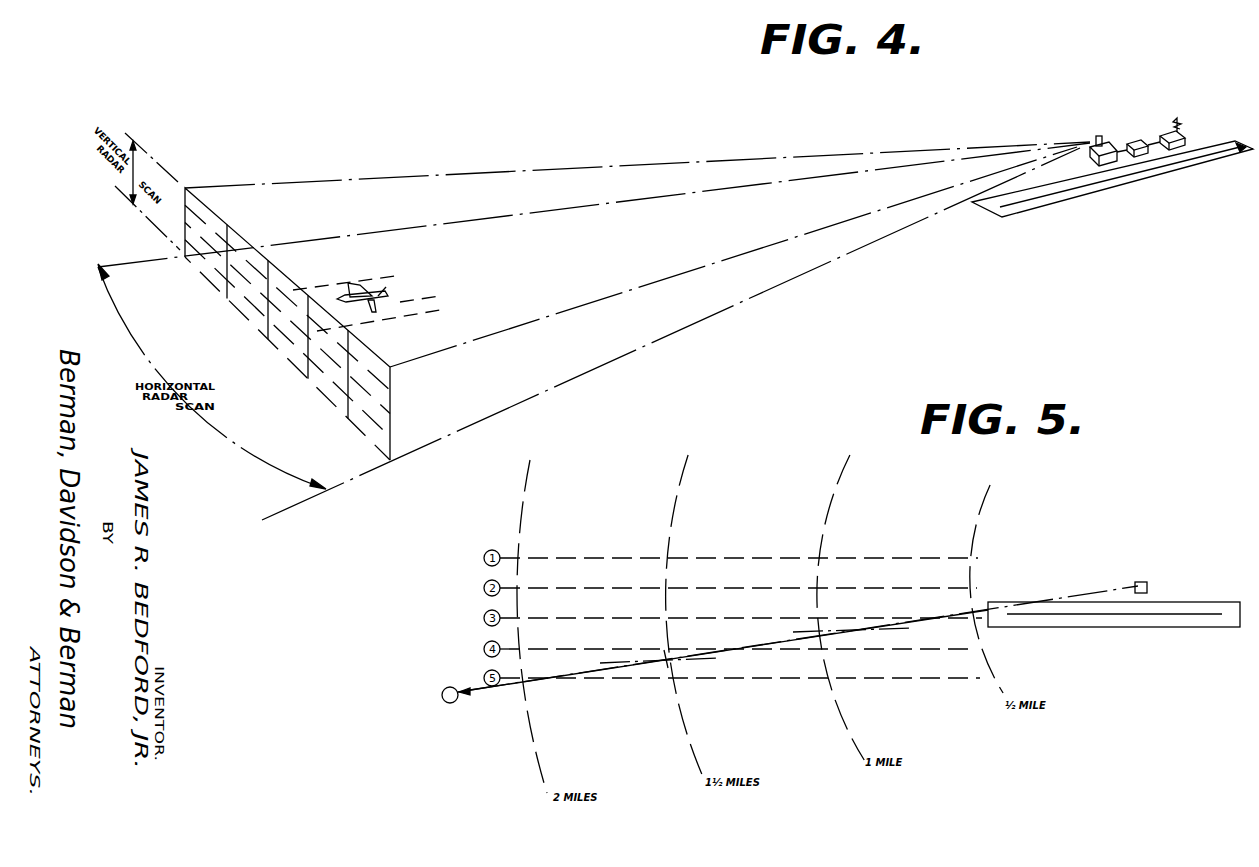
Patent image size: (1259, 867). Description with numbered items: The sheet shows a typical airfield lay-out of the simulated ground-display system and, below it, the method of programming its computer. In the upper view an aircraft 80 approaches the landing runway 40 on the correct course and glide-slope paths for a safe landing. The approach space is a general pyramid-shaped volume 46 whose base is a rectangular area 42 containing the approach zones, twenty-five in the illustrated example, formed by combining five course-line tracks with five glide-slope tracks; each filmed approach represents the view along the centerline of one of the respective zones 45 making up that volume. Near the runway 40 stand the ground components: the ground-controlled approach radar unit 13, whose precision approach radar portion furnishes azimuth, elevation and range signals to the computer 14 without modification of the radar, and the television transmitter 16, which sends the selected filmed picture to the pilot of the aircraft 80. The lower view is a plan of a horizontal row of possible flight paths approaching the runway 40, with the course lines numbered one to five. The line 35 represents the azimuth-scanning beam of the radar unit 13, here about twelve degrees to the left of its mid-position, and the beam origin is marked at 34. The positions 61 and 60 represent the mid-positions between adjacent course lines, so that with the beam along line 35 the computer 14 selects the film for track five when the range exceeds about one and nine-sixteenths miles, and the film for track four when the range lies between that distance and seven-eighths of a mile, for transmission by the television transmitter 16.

In FIG. 4, the ground-controlled approach radar unit 13 is at (1108, 134).
In FIG. 5, the ground-controlled approach radar unit 13 is at (1147, 585).
In FIG. 4, the computer 14 is at (1136, 141).
In FIG. 4, the television transmitter 16 is at (1162, 131).
In FIG. 5, the aircraft position indicator 34 is at (450, 695).
In FIG. 5, the azimuth-scanning beam line 35 is at (1082, 594).
In FIG. 4, the runway 40 is at (1068, 201).
In FIG. 5, the runway 40 is at (1090, 628).
In FIG. 4, the rectangle 42 is at (378, 354).
In FIG. 4, the approach zones 45 is at (388, 389).
In FIG. 4, the pyramid-shaped volume 46 is at (596, 152).
In FIG. 5, the mid-position between course lines 60 is at (665, 660).
In FIG. 5, the mid-position between course lines 61 is at (853, 631).
In FIG. 4, the aircraft 80 is at (372, 288).